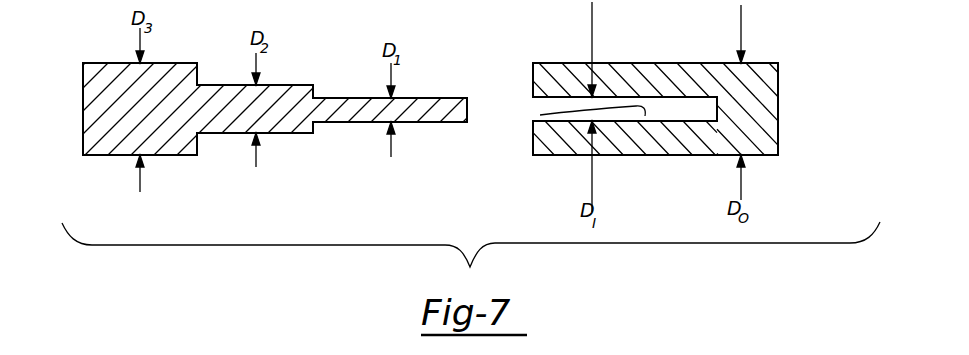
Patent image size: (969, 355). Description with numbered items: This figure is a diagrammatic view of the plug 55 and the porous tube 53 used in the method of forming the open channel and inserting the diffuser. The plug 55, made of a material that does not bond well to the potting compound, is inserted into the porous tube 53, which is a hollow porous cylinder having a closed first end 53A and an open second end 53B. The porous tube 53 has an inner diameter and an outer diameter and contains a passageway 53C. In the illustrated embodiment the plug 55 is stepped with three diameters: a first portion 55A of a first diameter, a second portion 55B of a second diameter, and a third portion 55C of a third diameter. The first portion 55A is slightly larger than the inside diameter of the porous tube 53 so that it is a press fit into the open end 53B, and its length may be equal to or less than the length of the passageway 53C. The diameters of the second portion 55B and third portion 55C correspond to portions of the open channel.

The plug 55 is at (83, 105).
The first portion of plug 55A is at (433, 122).
The second portion of plug 55B is at (292, 133).
The third portion of plug 55C is at (173, 155).
The porous tube 53 is at (645, 155).
The first end of porous tube 53A is at (778, 97).
The second end of porous tube 53B is at (552, 103).
The passageway 53C is at (541, 115).